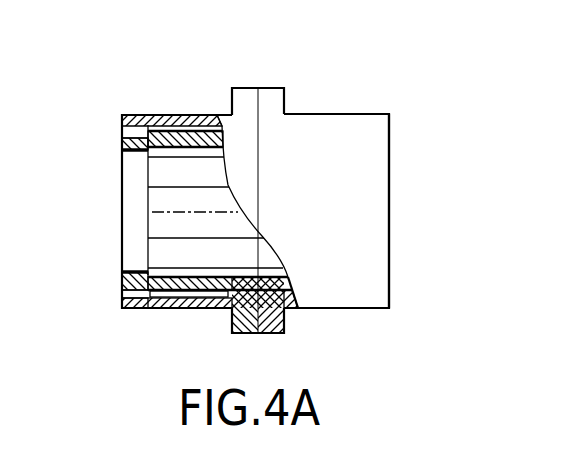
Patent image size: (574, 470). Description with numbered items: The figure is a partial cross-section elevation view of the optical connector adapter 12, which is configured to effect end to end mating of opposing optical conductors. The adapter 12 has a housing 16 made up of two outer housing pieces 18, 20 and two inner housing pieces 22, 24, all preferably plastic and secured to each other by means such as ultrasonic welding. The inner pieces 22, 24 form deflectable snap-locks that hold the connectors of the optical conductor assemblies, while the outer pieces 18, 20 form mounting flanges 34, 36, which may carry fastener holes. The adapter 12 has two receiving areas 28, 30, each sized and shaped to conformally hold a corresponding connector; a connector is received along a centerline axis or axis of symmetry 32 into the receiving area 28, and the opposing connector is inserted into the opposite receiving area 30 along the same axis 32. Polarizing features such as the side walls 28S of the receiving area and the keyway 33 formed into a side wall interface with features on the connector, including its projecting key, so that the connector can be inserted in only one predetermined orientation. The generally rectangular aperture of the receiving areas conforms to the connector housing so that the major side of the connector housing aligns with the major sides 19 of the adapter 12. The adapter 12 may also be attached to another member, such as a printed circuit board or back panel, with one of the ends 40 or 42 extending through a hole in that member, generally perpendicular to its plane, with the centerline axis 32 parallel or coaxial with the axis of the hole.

The adapter 12 is at (298, 85).
The housing 16 is at (352, 123).
The outer housing piece 18 is at (132, 115).
The major sides 19 is at (368, 165).
The outer housing piece 20 is at (287, 305).
The inner housing piece 22 is at (190, 290).
The inner housing piece 24 is at (297, 285).
The receiving area 28 is at (137, 225).
The side walls 28S is at (128, 152).
The receiving area 30 is at (390, 200).
The centerline axis 32 is at (150, 203).
The keyway 33 is at (167, 238).
The mounting flange 34 is at (242, 95).
The mounting flange 36 is at (238, 333).
The end 40 is at (390, 227).
The end 42 is at (123, 305).